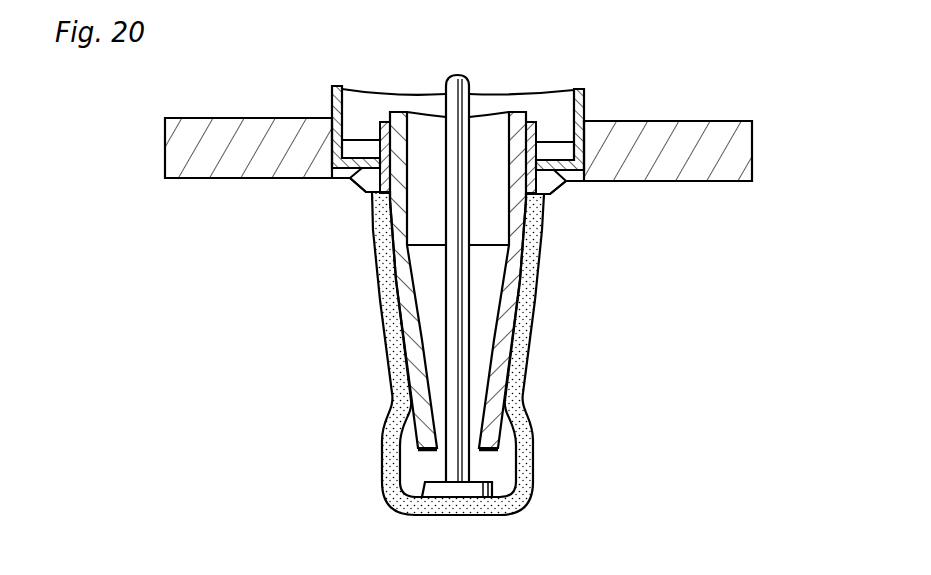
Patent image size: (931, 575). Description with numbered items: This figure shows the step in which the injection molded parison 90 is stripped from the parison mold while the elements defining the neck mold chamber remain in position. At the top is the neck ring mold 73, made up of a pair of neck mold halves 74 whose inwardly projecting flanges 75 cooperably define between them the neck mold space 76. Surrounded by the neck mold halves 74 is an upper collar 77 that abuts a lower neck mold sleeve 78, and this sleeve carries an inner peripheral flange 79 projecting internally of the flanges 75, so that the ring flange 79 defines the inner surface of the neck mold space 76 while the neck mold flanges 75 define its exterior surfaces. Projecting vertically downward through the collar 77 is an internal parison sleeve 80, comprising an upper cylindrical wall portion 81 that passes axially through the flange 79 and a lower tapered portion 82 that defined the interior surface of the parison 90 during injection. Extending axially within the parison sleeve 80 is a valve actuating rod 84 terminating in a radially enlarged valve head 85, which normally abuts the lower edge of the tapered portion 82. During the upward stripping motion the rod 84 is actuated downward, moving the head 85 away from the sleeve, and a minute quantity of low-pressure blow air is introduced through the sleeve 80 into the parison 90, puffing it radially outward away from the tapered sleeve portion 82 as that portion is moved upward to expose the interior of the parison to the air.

The neck ring mold 73 is at (753, 168).
The neck mold halves 74 is at (231, 125).
The inwardly projecting flanges 75 is at (545, 184).
The neck mold space 76 is at (540, 183).
The upper collar 77 is at (344, 91).
The lower neck mold sleeve 78 is at (346, 150).
The inner peripheral flange 79 is at (375, 178).
The internal parison sleeve 80 is at (491, 111).
The upper cylindrical wall portion 81 is at (521, 113).
The lower tapered portion 82 is at (413, 370).
The valve actuating rod 84 is at (458, 313).
The valve head 85 is at (470, 491).
The parison 90 is at (536, 345).